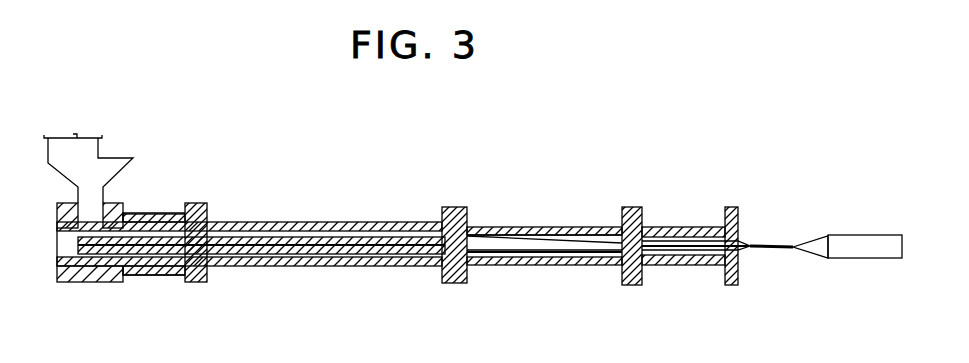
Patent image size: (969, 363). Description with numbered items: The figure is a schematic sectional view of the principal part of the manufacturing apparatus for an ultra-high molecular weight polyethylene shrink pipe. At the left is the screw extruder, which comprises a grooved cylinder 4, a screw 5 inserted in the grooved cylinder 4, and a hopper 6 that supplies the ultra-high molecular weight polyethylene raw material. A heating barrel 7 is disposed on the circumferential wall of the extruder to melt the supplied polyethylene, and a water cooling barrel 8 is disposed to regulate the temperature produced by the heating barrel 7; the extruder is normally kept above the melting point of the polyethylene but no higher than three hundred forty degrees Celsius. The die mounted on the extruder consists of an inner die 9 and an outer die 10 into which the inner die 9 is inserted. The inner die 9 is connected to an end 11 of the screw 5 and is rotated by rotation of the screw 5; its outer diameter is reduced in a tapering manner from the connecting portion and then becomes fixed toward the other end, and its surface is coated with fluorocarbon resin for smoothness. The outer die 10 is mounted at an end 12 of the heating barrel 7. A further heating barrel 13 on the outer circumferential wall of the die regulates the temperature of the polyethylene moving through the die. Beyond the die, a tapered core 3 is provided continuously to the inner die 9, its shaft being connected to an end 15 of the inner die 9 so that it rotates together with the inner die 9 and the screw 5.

The tapered core 3 is at (840, 240).
The grooved cylinder 4 is at (110, 268).
The screw 5 is at (330, 240).
The hopper 6 is at (111, 165).
The heating barrel 7 is at (262, 222).
The water cooling barrel 8 is at (150, 213).
The inner die 9 is at (568, 236).
The outer die 10 is at (535, 227).
The end of the screw 11 is at (470, 228).
The end of the heating barrel 12 is at (448, 207).
The heating barrel 13 is at (605, 227).
The end of the inner die 15 is at (750, 252).